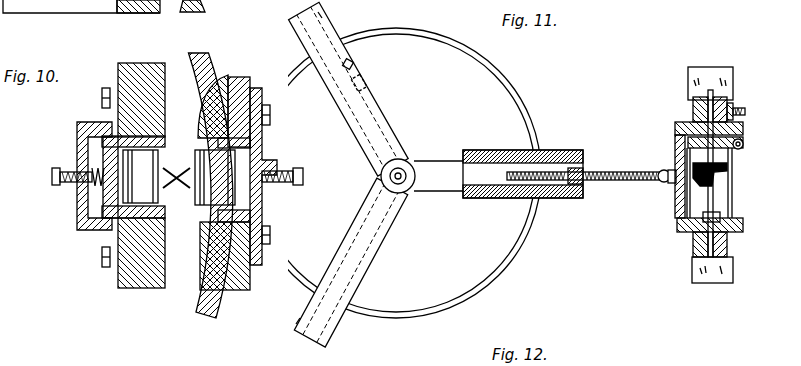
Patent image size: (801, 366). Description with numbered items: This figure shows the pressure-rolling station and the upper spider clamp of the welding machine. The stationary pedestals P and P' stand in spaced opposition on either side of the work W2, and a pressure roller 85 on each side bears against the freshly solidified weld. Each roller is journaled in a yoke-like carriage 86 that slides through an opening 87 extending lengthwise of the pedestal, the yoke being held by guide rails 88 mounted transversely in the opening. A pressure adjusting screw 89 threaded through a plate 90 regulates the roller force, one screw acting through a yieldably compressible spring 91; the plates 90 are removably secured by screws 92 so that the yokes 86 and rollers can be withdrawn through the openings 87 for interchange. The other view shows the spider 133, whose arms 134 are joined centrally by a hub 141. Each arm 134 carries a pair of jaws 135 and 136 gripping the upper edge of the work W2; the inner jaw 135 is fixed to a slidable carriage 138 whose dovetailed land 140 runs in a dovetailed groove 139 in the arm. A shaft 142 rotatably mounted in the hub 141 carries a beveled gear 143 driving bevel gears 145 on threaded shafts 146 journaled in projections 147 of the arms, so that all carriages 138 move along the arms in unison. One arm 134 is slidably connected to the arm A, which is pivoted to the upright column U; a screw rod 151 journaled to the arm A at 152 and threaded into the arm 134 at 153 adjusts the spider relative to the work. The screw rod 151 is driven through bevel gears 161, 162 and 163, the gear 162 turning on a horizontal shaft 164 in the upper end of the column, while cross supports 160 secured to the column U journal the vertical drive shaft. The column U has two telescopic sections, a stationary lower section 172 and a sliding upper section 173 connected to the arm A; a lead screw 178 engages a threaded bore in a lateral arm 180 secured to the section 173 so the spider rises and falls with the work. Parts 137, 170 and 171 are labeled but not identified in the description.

In FIG. 10, the pressure roller 85 is at (146, 150).
In FIG. 10, the yoke-like carriage 86 is at (103, 230).
In FIG. 10, the opening 87 is at (172, 140).
In FIG. 10, the guide rail 88 is at (243, 84).
In FIG. 10, the pressure adjusting screw 89 is at (70, 178).
In FIG. 10, the plate 90 is at (80, 122).
In FIG. 10, the spring 91 is at (107, 172).
In FIG. 10, the screw 92 is at (106, 88).
In FIG. 10, the stationary pedestal P is at (143, 307).
In FIG. 10, the stationary pedestal P' is at (265, 282).
In FIG. 10, the work W2 is at (203, 5).
In FIG. 11, the work W2 is at (497, 60).
In FIG. 11, the spider 133 is at (434, 152).
In FIG. 11, the spider arm 134 is at (384, 102).
In FIG. 11, the inner jaw 135 is at (330, 7).
In FIG. 11, the jaw 136 is at (340, 26).
In FIG. 11, the bolt 137 is at (388, 118).
In FIG. 11, the slidable carriage 138 is at (362, 82).
In FIG. 11, the dovetailed groove 139 is at (306, 336).
In FIG. 11, the dovetailed land 140 is at (398, 80).
In FIG. 11, the hub 141 is at (382, 176).
In FIG. 11, the shaft 142 is at (414, 178).
In FIG. 11, the beveled gear 143 is at (400, 194).
In FIG. 11, the bevel gear 145 is at (430, 153).
In FIG. 11, the threaded shaft 146 is at (394, 90).
In FIG. 11, the projection 147 is at (394, 142).
In FIG. 11, the screw rod 151 is at (603, 172).
In FIG. 11, the journal 152 is at (683, 220).
In FIG. 11, the threaded engagement 153 is at (582, 188).
In FIG. 11, the cross support 160 is at (683, 233).
In FIG. 11, the bevel gear 161 is at (712, 165).
In FIG. 11, the bevel gear 162 is at (690, 144).
In FIG. 11, the bevel gear 163 is at (683, 213).
In FIG. 11, the horizontal shaft 164 is at (708, 97).
In FIG. 11, the roller 170 is at (739, 152).
In FIG. 11, the stud 171 is at (742, 107).
In FIG. 11, the lower column section 172 is at (712, 66).
In FIG. 11, the upper column section 173 is at (715, 100).
In FIG. 11, the lead screw 178 is at (680, 178).
In FIG. 11, the laterally extending arm 180 is at (700, 182).
In FIG. 11, the arm A is at (565, 153).
In FIG. 11, the upright column U is at (688, 67).